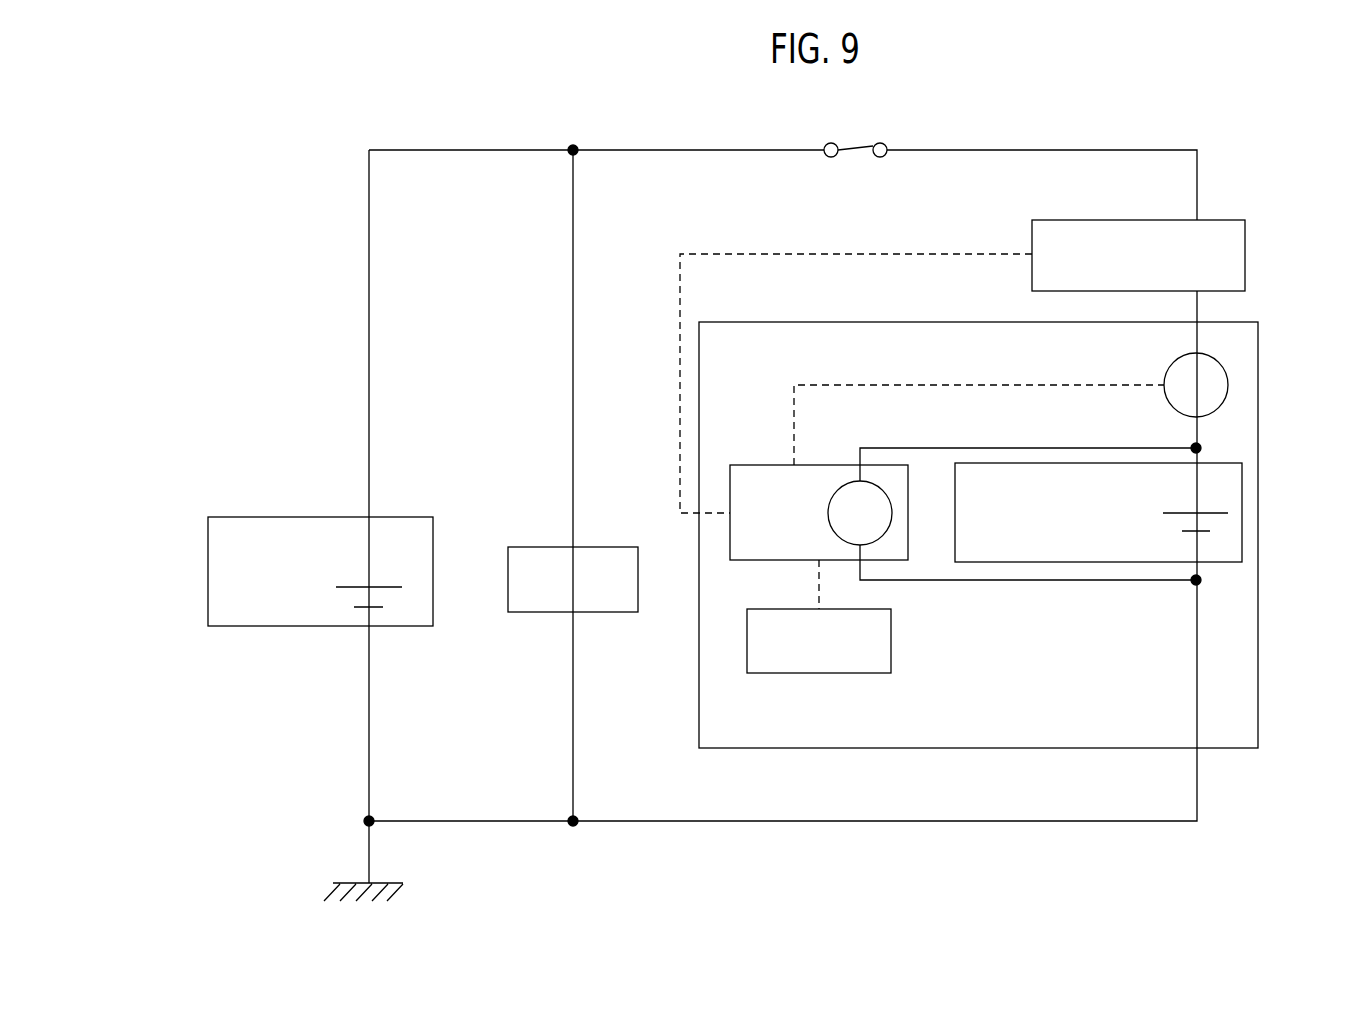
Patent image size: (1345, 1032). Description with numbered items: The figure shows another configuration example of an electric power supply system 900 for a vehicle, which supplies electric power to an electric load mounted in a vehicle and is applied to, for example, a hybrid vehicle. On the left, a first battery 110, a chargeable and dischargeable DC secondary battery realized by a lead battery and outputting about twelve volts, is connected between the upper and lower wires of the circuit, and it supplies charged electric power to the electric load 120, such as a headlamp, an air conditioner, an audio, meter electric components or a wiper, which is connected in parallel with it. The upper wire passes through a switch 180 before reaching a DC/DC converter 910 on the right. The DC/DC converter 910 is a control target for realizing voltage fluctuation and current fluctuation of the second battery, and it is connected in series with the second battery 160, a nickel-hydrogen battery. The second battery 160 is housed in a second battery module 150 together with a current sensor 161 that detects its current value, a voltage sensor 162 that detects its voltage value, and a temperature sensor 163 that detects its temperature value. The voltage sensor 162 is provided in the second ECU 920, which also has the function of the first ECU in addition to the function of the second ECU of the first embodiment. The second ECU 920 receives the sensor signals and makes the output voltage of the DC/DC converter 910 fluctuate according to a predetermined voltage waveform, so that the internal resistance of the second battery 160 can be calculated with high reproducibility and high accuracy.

The first battery 110 is at (408, 516).
The electric load 120 is at (612, 546).
The second battery module 150 is at (942, 321).
The second battery 160 is at (1217, 463).
The current sensor 161 is at (1170, 362).
The voltage sensor 162 is at (893, 512).
The temperature sensor 163 is at (893, 636).
The switch 180 is at (853, 143).
The electric power supply system for a vehicle 900 is at (768, 913).
The DC/DC converter 910 is at (1222, 220).
The second ECU 920 is at (817, 464).